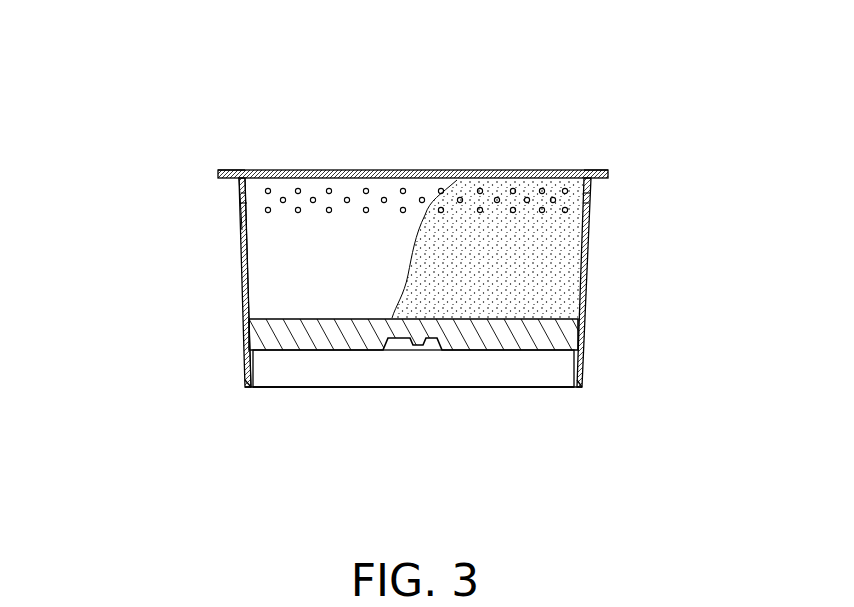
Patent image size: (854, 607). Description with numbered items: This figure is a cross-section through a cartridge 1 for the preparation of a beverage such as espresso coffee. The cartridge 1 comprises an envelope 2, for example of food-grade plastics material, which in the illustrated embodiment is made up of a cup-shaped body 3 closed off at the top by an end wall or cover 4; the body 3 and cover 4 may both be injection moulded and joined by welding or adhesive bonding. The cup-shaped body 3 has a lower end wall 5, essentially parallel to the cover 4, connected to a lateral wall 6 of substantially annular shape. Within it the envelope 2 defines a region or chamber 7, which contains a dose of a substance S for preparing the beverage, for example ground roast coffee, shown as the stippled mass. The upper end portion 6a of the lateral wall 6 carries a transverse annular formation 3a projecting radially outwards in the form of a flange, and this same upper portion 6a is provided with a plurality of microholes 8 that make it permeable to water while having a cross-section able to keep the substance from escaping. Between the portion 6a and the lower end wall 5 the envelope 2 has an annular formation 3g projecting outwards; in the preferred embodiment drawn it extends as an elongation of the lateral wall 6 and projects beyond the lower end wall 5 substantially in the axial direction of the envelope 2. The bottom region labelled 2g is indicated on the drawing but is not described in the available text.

The cartridge 1 is at (567, 118).
The envelope 2 is at (241, 297).
The bottom wall of container body 2g is at (525, 380).
The cup-shaped body 3 is at (590, 268).
The transverse annular formation 3a is at (228, 170).
The annular formation 3g is at (284, 388).
The cover 4 is at (396, 171).
The lower end wall 5 is at (335, 342).
The lateral wall 6 is at (239, 267).
The upper end portion of lateral wall 6a is at (226, 203).
The chamber 7 is at (380, 266).
The microholes 8 is at (306, 192).
The substance S is at (535, 283).